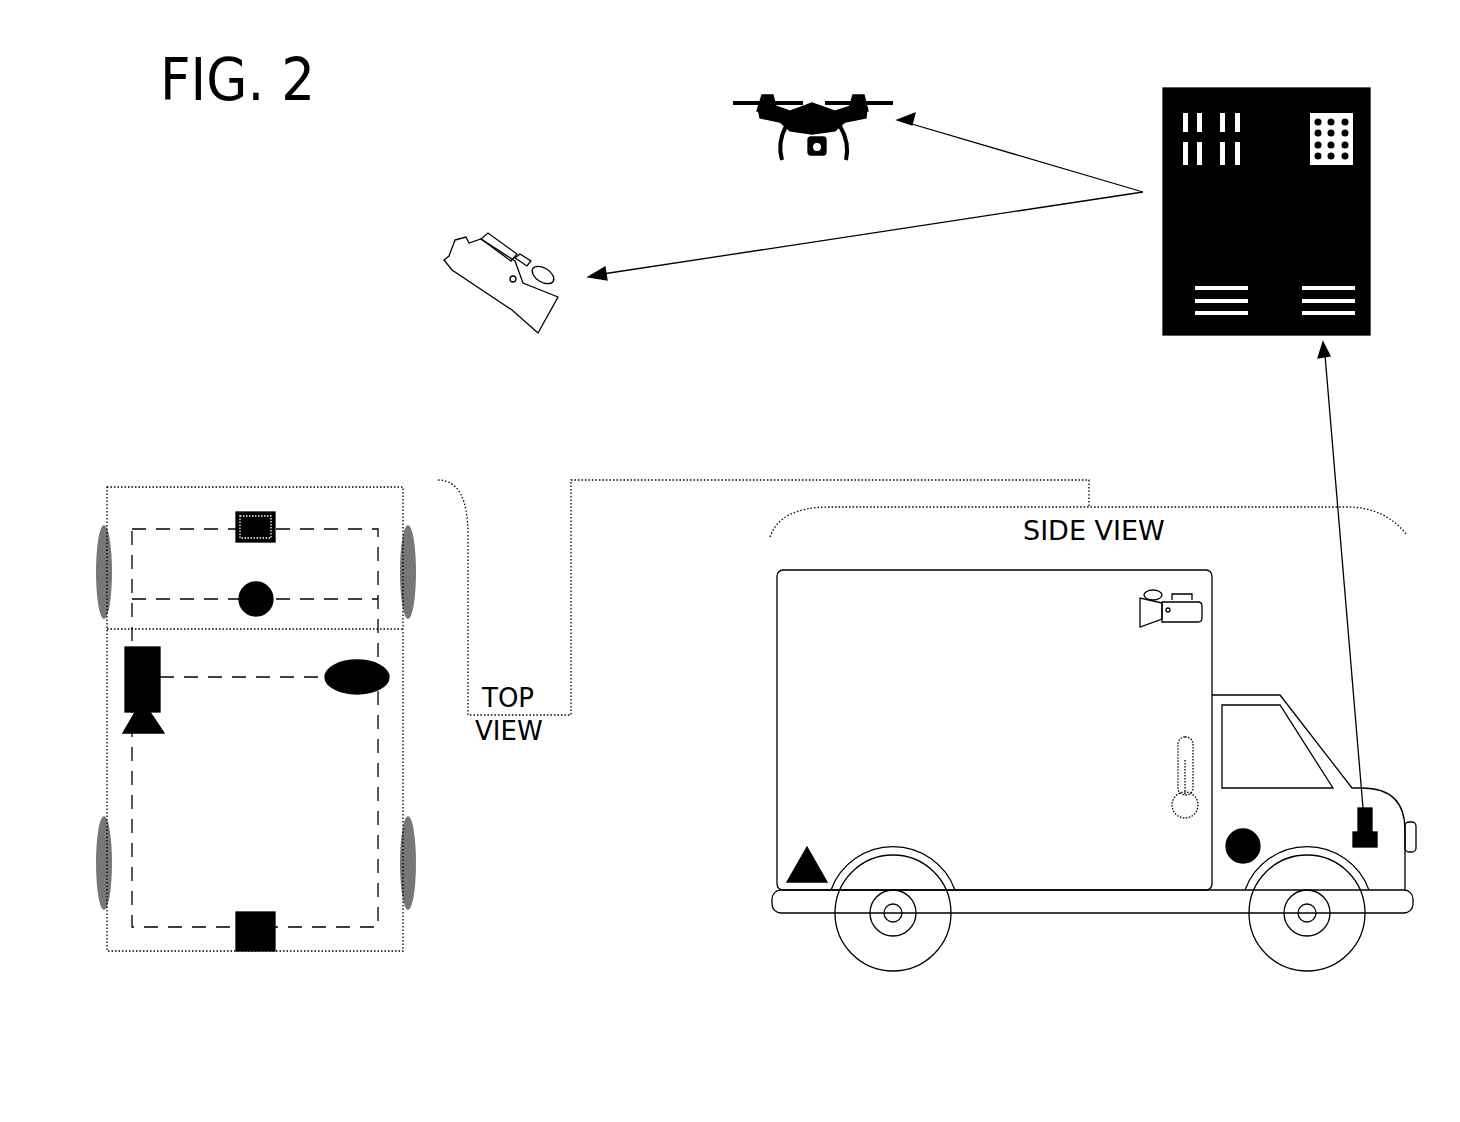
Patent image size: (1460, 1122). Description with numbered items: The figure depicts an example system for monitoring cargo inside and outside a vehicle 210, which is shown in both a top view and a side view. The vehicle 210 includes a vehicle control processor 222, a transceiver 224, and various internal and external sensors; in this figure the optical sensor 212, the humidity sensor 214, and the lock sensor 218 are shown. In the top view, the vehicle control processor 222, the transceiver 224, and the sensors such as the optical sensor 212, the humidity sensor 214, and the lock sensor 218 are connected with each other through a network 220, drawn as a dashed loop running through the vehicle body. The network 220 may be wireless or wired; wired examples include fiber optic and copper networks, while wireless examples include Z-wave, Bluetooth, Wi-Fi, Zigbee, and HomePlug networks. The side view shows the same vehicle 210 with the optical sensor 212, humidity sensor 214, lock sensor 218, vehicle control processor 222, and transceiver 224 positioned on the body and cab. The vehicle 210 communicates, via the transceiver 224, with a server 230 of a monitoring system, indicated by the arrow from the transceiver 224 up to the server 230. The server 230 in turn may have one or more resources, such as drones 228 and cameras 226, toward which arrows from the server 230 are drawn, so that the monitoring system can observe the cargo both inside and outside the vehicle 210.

The vehicle 210 is at (160, 487).
The optical sensor 212 is at (160, 702).
The humidity sensor 214 is at (340, 665).
The lock sensor 218 is at (268, 912).
The network 220 is at (132, 863).
The vehicle control processor 222 is at (278, 575).
The transceiver 224 is at (275, 522).
The camera 226 is at (500, 240).
The drone 228 is at (893, 103).
The server 230 is at (1370, 113).